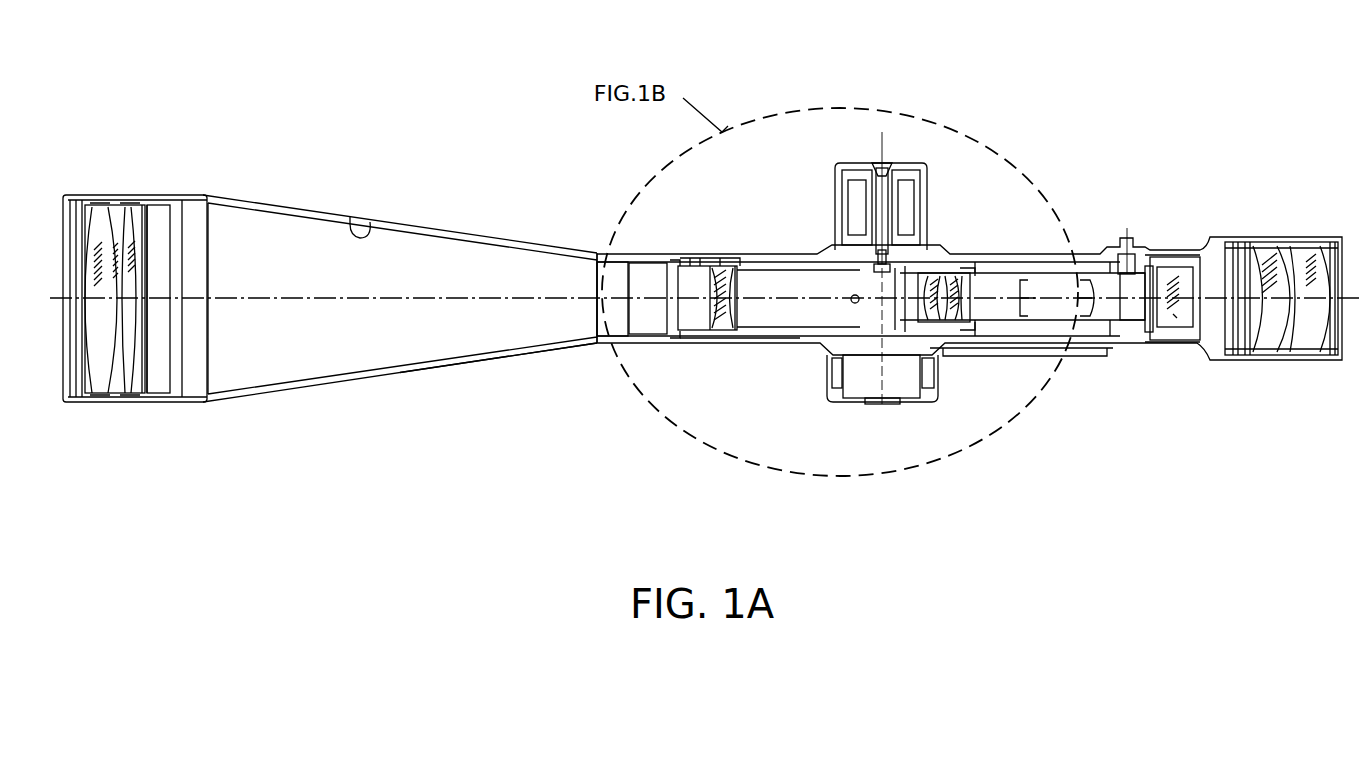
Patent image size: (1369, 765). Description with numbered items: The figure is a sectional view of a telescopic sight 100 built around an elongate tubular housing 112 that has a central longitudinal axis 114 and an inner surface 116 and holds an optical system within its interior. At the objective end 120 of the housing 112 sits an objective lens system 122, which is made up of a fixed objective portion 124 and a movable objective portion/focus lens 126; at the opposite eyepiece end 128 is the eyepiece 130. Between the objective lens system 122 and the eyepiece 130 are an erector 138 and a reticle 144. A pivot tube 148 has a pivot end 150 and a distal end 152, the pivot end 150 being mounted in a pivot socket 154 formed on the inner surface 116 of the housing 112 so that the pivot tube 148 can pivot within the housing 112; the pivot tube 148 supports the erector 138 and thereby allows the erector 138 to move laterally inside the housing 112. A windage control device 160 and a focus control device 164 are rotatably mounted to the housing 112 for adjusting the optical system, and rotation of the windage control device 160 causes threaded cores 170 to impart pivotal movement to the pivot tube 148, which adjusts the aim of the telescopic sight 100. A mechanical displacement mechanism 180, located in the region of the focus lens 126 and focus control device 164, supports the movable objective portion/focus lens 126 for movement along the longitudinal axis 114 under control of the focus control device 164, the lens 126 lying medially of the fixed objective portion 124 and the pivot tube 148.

The telescopic sight 100 is at (468, 68).
The elongate tubular housing 112 is at (305, 209).
The central longitudinal axis 114 is at (282, 298).
The inner surface 116 is at (370, 222).
The objective end 120 is at (155, 178).
The objective lens system 122 is at (465, 392).
The fixed objective portion 124 is at (137, 385).
The movable objective portion/focus lens 126 is at (724, 320).
The eyepiece end 128 is at (1292, 215).
The eyepiece 130 is at (1295, 322).
The erector 138 is at (940, 288).
The reticle 144 is at (1152, 275).
The pivot tube 148 is at (1053, 358).
The pivot end 150 is at (1140, 252).
The distal end 152 is at (903, 272).
The pivot socket 154 is at (1183, 258).
The windage control device 160 is at (845, 143).
The focus control device 164 is at (946, 410).
The threaded cores 170 is at (883, 190).
The mechanical displacement mechanism 180 is at (712, 252).